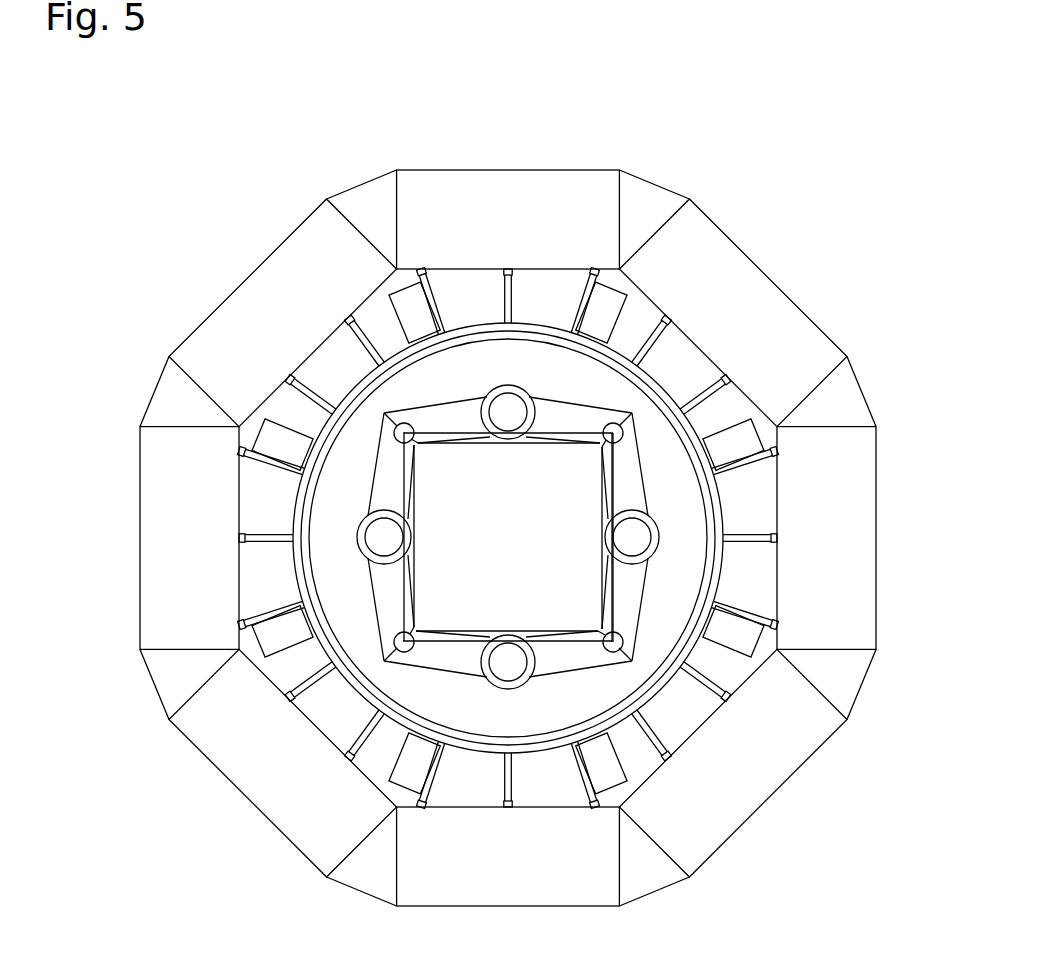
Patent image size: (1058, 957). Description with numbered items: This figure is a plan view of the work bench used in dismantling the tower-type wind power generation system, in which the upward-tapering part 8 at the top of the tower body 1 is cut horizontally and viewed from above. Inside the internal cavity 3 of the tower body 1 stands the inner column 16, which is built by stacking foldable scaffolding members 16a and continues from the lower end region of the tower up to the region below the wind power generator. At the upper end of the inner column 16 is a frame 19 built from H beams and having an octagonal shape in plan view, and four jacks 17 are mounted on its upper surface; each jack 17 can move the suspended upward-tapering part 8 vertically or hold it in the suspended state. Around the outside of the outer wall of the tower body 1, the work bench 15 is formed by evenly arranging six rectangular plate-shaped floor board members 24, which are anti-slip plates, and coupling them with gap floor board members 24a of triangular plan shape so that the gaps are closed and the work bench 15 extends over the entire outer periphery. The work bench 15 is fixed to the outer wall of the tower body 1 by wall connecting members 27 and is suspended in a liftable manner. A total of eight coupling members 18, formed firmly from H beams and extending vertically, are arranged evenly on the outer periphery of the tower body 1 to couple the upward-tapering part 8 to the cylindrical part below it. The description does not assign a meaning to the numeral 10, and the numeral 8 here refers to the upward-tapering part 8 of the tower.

The tower body 1 is at (347, 365).
The internal cavity 3 is at (453, 710).
The upward-tapering part 8 is at (508, 538).
The ring 10 is at (663, 389).
The work bench 15 is at (581, 147).
The inner column 16 is at (509, 543).
The scaffolding member 16a is at (618, 495).
The jack 17 is at (532, 395).
The coupling member 18 is at (747, 618).
The frame 19 is at (621, 640).
The floor board member 24 is at (778, 788).
The gap floor board member 24a is at (863, 680).
The wall connecting member 27 is at (720, 684).